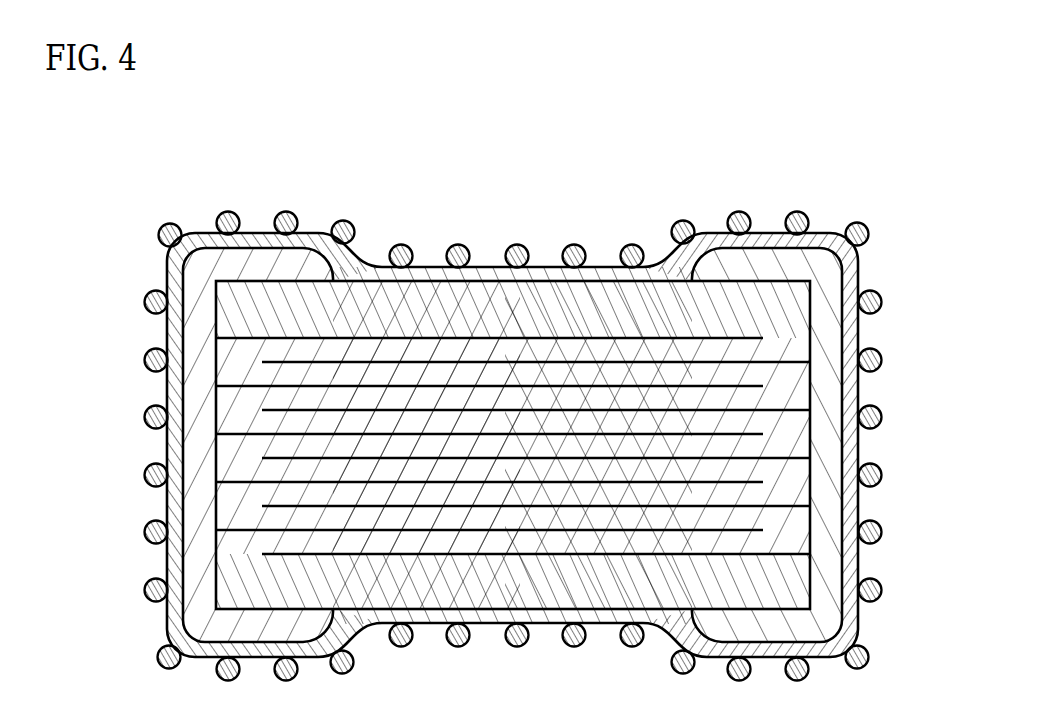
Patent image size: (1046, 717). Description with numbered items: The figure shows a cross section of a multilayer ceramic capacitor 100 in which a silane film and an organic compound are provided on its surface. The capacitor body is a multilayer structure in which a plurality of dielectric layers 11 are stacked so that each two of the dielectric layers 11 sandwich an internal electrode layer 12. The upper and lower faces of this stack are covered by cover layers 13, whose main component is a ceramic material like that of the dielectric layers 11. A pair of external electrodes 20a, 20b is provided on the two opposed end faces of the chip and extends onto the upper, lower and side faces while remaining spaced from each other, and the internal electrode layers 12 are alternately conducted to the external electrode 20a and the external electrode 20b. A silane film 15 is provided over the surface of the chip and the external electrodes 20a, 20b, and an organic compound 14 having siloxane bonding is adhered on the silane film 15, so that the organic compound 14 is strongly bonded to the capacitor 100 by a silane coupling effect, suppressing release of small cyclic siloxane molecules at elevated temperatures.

The multilayer ceramic capacitor 100 is at (737, 198).
The dielectric layer 11 is at (633, 517).
The internal electrode layer 12 is at (492, 483).
The cover layer 13 is at (425, 300).
The organic compound 14 is at (573, 244).
The silane film 15 is at (703, 247).
The external electrode 20a is at (200, 387).
The external electrode 20b is at (828, 328).